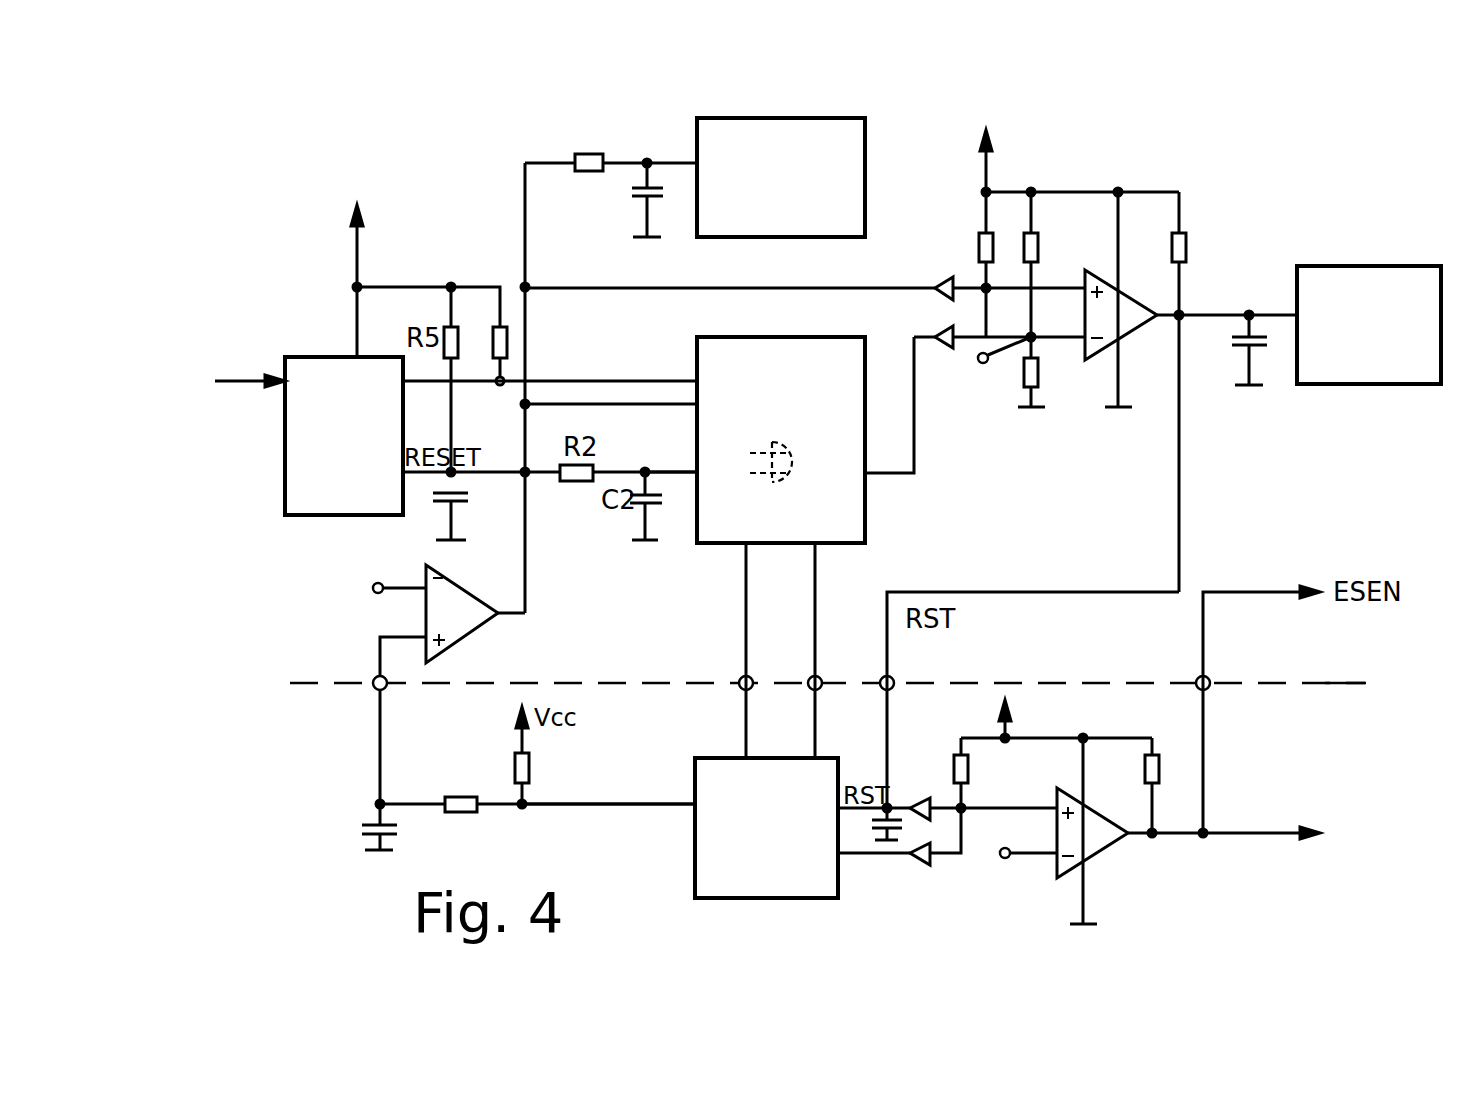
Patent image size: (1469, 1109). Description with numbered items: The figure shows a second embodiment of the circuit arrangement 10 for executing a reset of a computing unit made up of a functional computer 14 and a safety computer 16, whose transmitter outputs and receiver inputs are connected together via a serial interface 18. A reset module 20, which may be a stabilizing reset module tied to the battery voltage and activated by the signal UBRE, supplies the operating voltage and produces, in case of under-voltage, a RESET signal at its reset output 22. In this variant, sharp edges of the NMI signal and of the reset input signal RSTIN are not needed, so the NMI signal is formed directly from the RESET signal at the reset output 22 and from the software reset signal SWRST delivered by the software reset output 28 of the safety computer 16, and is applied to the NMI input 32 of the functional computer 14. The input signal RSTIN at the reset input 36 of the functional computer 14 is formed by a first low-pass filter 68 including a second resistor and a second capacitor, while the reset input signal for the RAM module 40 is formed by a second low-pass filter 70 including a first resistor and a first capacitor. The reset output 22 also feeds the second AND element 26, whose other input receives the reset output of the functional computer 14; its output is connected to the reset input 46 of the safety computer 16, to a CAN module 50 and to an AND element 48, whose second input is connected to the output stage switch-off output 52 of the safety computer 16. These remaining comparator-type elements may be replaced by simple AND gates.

The circuit arrangement 10 is at (298, 748).
The functional computer 14 is at (824, 382).
The safety computer 16 is at (788, 878).
The serial interface 18 is at (728, 674).
The reset module 20 is at (300, 513).
The reset output 22 is at (406, 479).
The second AND element 26 is at (1092, 170).
The software reset output 28 is at (693, 808).
The NMI input 32 is at (693, 408).
The reset input 36 is at (693, 478).
The RAM module 40 is at (840, 152).
The reset input 46 is at (845, 792).
The AND element 48 is at (978, 912).
The CAN module 50 is at (1385, 293).
The output stage switch-off output 52 is at (840, 862).
The first low-pass filter 68 is at (610, 532).
The second low-pass filter 70 is at (620, 217).